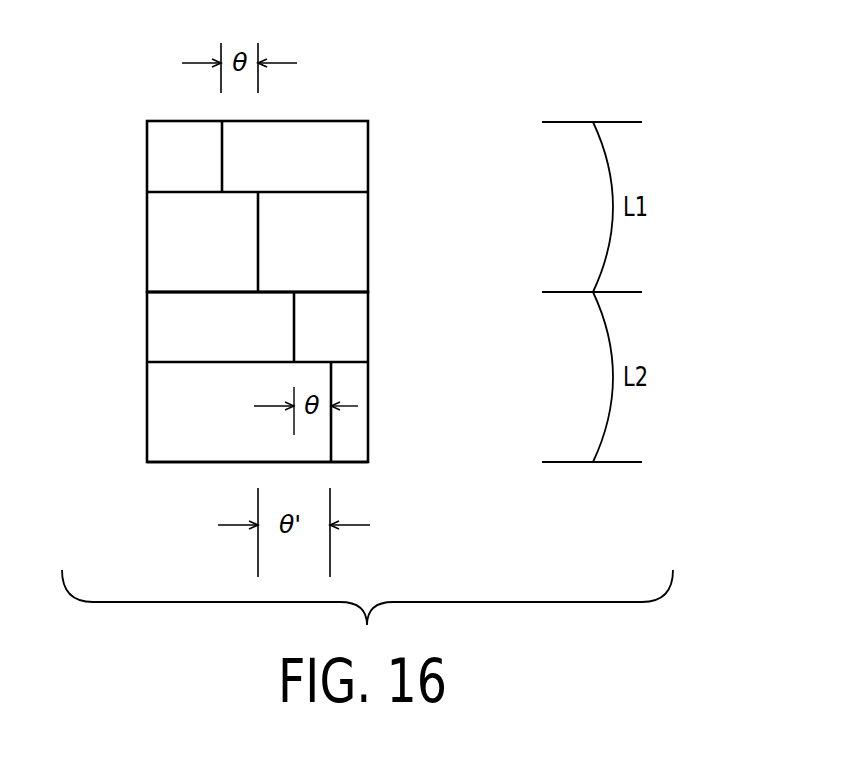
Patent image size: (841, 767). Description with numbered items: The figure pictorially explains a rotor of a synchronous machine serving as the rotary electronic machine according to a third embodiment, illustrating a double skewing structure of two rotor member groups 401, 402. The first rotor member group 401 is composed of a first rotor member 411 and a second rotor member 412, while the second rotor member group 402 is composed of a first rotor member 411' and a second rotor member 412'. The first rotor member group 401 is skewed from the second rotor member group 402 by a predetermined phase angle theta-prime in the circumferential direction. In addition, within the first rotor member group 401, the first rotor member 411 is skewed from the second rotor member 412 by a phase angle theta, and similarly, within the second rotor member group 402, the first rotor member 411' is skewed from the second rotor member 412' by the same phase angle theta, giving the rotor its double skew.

The first rotor member group 401 is at (376, 123).
The second rotor member group 402 is at (376, 293).
The first rotor member 411 is at (213, 156).
The second rotor member 412 is at (213, 242).
The first rotor member 411' is at (213, 327).
The second rotor member 412' is at (213, 412).